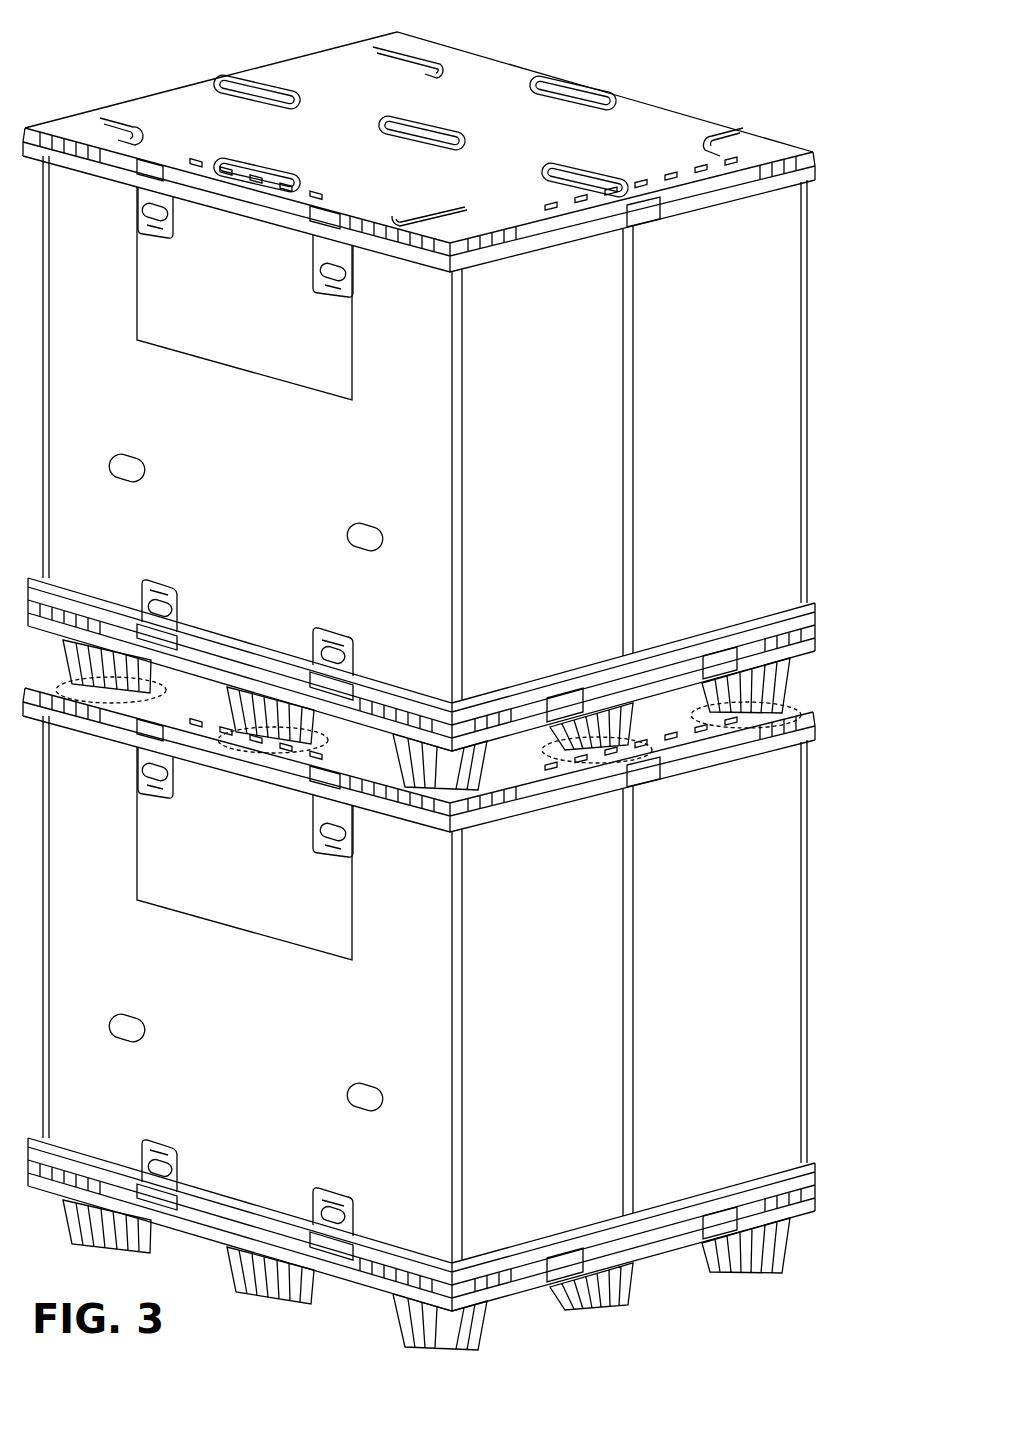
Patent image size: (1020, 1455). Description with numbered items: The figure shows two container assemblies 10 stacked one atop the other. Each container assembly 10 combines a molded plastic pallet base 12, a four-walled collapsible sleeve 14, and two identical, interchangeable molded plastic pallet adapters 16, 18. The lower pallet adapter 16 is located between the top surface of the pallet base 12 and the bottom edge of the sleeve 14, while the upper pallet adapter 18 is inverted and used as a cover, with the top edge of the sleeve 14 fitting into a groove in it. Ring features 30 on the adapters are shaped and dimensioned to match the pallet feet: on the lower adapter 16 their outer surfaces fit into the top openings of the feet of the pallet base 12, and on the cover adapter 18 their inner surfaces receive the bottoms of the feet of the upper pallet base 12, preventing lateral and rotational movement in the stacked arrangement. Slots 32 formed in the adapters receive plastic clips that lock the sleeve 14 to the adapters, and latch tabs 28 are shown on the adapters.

The container assembly 10 is at (828, 328).
The pallet base 12 is at (818, 643).
The collapsible sleeve 14 is at (807, 457).
The pallet adapter 16 is at (818, 612).
The pallet adapter 18 is at (816, 166).
The latch tab 28 is at (177, 1147).
The ring features 30 is at (579, 78).
The slots 32 is at (165, 1210).